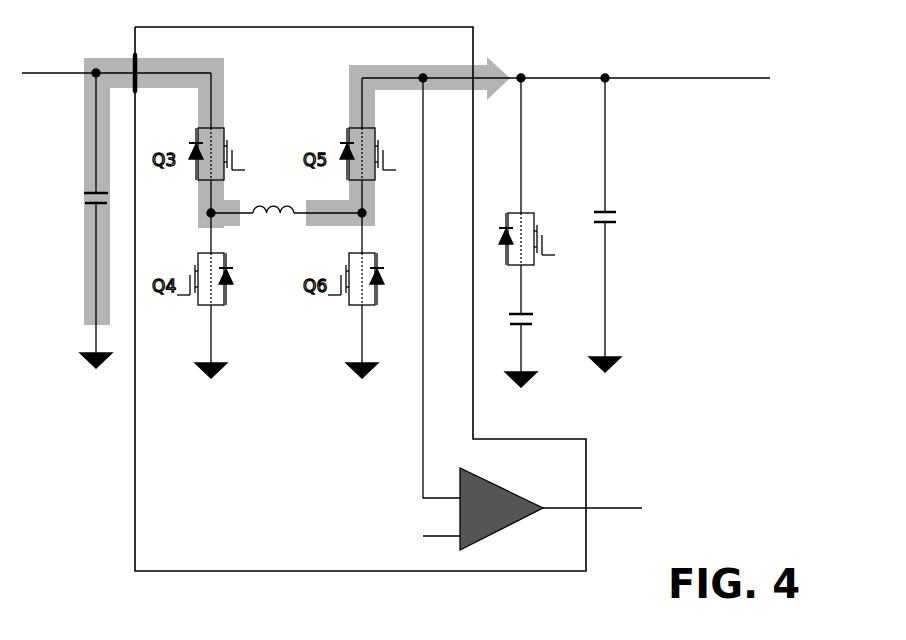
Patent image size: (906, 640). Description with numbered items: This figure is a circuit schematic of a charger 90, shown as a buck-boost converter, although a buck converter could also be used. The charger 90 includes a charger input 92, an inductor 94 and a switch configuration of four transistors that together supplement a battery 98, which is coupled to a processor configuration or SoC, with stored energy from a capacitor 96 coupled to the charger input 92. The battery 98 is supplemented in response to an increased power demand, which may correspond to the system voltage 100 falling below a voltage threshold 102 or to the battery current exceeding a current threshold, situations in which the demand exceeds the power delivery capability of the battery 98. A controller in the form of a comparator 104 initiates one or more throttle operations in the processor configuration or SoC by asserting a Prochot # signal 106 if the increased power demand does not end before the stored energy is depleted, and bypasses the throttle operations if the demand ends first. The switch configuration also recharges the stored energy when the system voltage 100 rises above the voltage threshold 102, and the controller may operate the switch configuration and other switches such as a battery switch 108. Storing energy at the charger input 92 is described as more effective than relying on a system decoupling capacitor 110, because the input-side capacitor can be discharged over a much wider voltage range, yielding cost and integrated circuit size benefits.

The charger 90 is at (306, 65).
The charger input 92 is at (131, 62).
The inductor 94 is at (267, 242).
The capacitor 96 is at (75, 203).
The battery 98 is at (502, 335).
The system voltage 100 is at (670, 78).
The voltage threshold 102 is at (446, 536).
The comparator 104 is at (490, 480).
The Prochot # signal 106 is at (618, 508).
The battery switch 108 is at (527, 186).
The system decoupling capacitor 110 is at (638, 220).